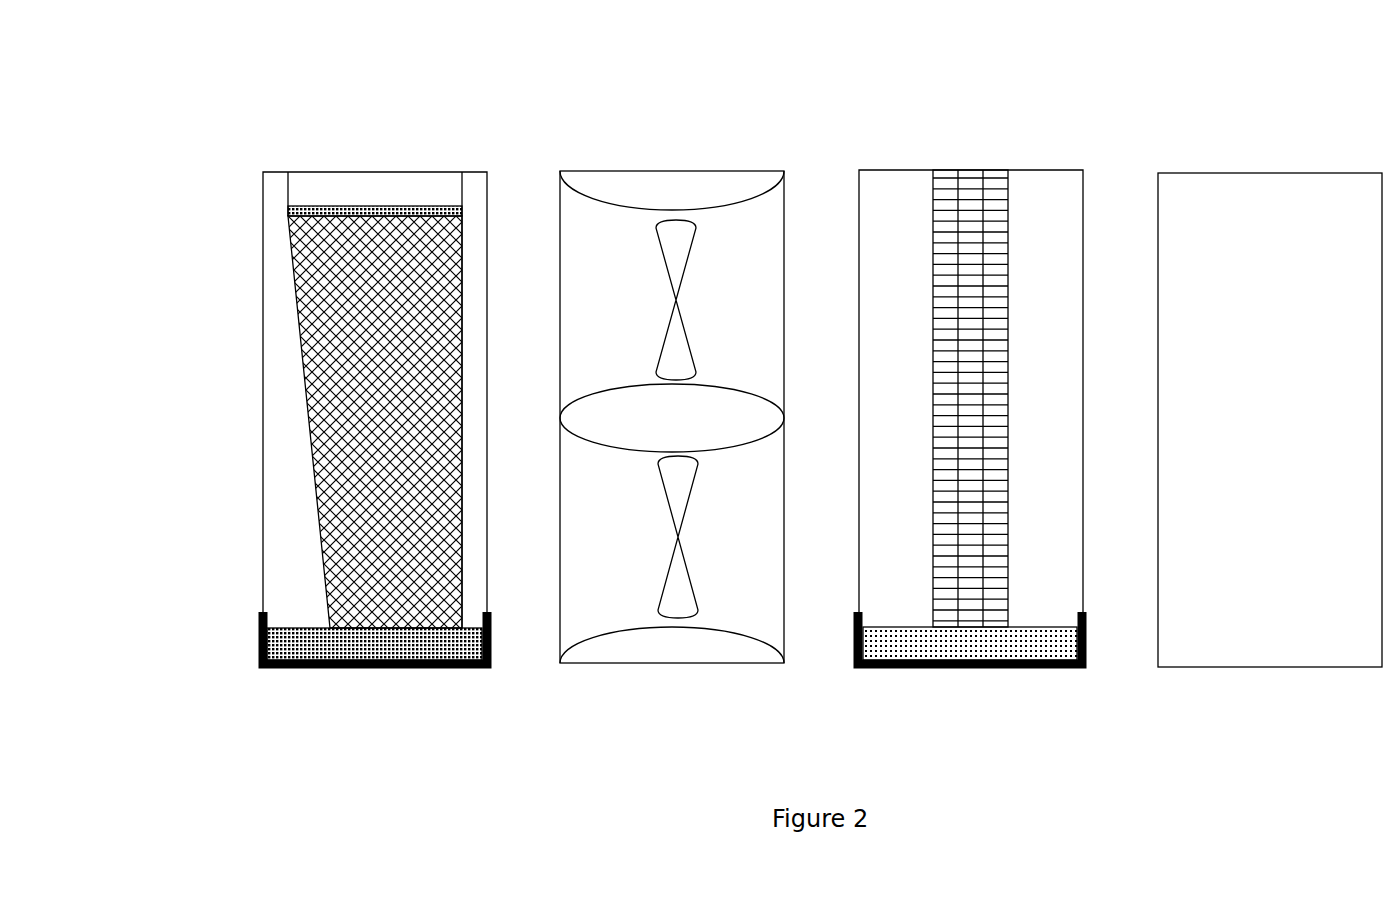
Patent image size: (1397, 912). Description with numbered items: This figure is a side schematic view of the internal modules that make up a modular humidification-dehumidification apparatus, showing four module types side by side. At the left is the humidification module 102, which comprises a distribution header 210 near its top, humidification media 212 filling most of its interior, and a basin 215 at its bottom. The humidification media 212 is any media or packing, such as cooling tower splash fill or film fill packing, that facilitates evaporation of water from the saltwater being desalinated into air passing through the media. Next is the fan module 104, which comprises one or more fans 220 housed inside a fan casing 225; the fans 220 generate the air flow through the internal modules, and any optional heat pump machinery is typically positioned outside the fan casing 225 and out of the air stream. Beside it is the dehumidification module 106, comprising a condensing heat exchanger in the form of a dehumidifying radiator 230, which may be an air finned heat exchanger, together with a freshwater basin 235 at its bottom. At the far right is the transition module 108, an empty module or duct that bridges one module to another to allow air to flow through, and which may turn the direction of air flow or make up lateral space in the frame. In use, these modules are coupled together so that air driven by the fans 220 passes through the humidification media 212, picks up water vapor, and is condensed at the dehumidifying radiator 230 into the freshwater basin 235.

The humidification module 102 is at (263, 172).
The fan module 104 is at (560, 173).
The dehumidification module 106 is at (859, 172).
The transition module 108 is at (1158, 175).
The distribution header 210 is at (355, 206).
The humidification media 212 is at (292, 262).
The basin 215 is at (275, 668).
The fans 220 is at (668, 220).
The fan casing 225 is at (762, 192).
The dehumidifying radiator 230 is at (972, 177).
The freshwater basin 235 is at (888, 667).